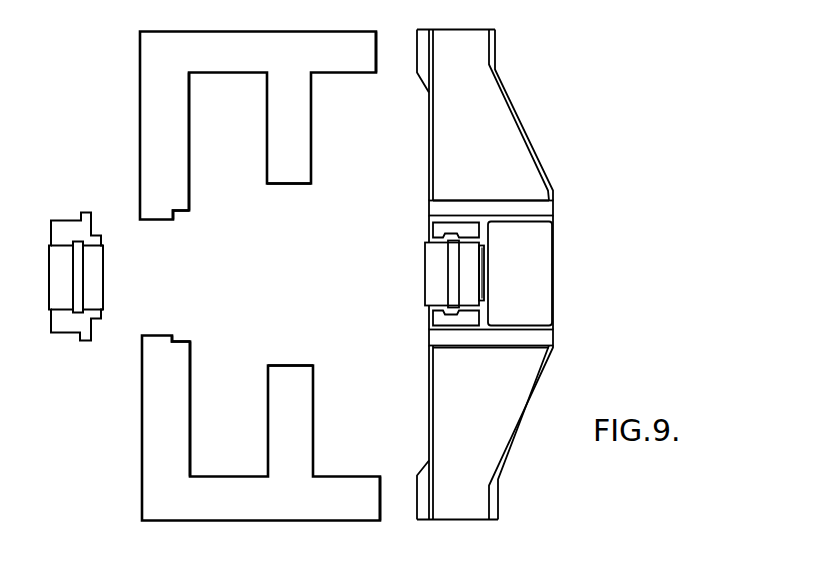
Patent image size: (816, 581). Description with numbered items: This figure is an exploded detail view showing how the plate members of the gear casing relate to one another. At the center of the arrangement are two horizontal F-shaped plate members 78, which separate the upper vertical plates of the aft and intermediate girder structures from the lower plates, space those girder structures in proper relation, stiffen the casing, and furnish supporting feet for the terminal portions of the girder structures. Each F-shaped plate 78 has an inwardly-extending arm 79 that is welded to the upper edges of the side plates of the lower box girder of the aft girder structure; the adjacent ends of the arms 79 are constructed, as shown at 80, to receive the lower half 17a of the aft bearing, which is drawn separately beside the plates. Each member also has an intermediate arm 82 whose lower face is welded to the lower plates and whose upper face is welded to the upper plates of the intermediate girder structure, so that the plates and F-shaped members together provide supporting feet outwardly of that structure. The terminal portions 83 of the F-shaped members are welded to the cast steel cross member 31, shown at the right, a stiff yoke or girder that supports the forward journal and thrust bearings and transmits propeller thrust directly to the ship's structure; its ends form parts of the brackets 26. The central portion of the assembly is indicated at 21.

The lower half of the bearing 17a is at (75, 334).
The central hub assembly 21 is at (546, 227).
The brackets 26 is at (478, 519).
The cross member 31 is at (522, 125).
The F-shaped plate member 78 is at (344, 71).
The inwardly-extending arm 79 is at (188, 193).
The bearing-receiving construction of the arm ends 80 is at (180, 210).
The intermediate arm 82 is at (303, 182).
The terminal portions 83 is at (375, 72).